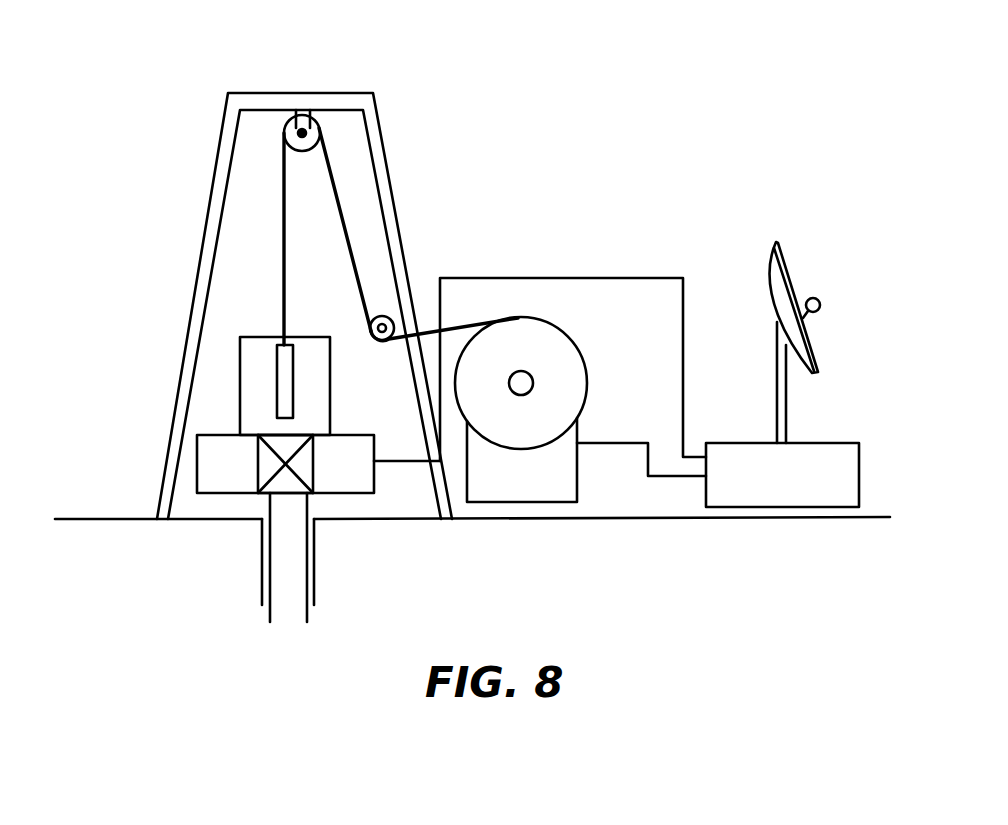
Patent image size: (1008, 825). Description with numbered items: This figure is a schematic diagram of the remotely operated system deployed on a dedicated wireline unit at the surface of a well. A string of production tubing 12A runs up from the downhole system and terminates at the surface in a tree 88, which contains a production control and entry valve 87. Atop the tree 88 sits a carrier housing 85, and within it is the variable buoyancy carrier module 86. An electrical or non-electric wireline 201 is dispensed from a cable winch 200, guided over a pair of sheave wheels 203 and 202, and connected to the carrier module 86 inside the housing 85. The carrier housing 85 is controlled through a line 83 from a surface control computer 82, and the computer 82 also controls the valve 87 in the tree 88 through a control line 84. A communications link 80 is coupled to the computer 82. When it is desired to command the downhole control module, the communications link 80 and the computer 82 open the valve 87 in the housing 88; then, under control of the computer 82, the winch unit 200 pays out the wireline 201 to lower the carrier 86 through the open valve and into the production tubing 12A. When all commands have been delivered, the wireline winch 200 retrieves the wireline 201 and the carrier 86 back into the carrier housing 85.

The sheave wheel 203 is at (307, 117).
The sheave wheel 202 is at (393, 278).
The wireline 201 is at (460, 327).
The cable winch 200 is at (567, 335).
The line 83 is at (661, 278).
The control line 84 is at (598, 443).
The surface control computer 82 is at (857, 443).
The communications link 80 is at (815, 357).
The carrier housing 85 is at (330, 386).
The carrier module 86 is at (277, 388).
The production control and entry valve 87 is at (258, 466).
The tree 88 is at (374, 486).
The production tubing 12A is at (317, 582).